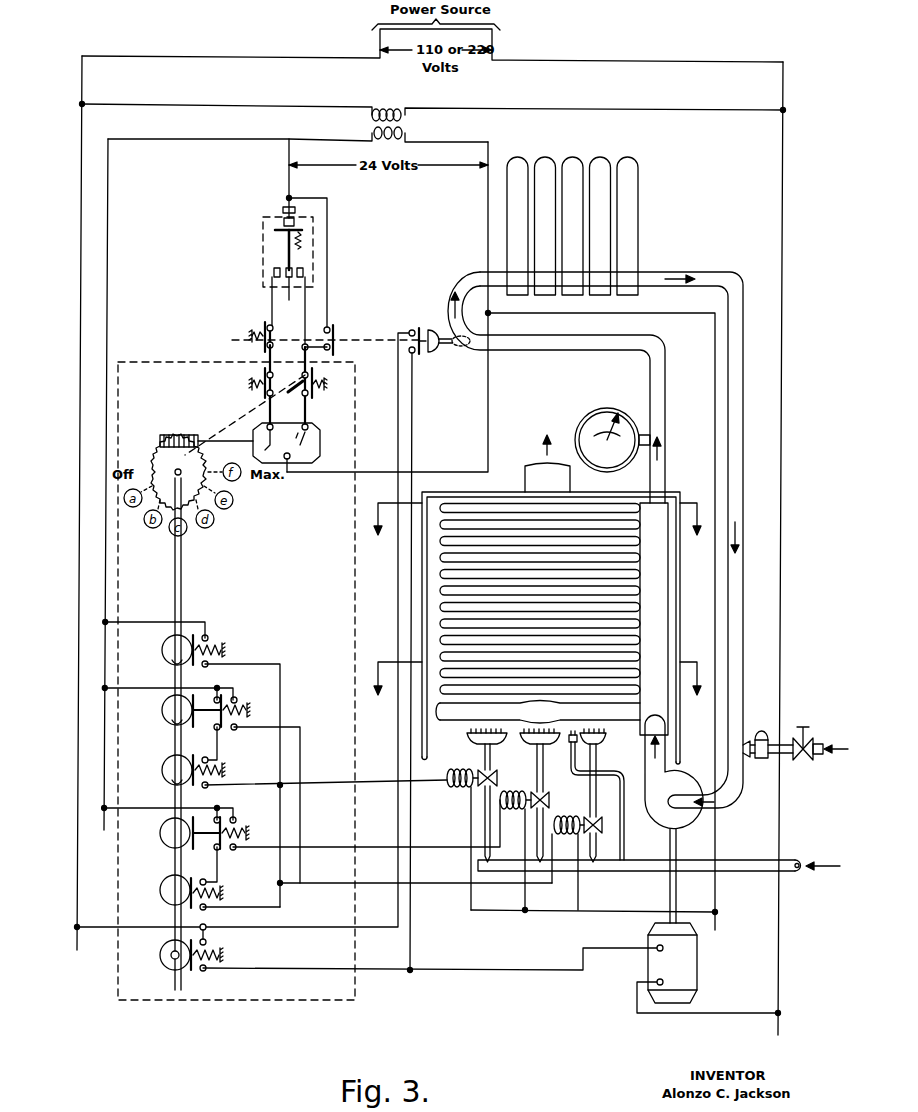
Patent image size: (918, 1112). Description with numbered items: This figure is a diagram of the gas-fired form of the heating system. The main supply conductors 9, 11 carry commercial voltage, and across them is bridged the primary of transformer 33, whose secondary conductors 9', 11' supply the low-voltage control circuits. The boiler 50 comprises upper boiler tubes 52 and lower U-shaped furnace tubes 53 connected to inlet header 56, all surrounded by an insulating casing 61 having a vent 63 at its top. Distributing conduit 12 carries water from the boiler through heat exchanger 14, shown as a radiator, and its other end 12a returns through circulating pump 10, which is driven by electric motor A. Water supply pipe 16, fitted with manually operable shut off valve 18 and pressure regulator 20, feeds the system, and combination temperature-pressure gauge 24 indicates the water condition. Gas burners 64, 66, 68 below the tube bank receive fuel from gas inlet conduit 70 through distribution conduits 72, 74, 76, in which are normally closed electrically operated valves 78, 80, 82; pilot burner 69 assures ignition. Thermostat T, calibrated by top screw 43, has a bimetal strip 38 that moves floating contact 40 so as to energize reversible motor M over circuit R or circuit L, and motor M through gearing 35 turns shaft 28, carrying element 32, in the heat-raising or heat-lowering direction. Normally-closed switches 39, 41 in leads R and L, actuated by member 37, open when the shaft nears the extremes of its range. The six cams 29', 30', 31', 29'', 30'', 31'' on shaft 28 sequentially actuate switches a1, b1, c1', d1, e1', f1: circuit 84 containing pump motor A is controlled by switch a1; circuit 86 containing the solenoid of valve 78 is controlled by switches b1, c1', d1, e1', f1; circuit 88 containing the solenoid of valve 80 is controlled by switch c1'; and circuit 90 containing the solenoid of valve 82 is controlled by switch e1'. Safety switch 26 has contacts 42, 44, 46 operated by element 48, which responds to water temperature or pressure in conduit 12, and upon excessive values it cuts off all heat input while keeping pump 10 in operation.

The electrical supply conductor 9 is at (426, 488).
The secondary conductor 9' is at (286, 472).
The electrical supply conductor 11 is at (451, 548).
The secondary conductor 11' is at (521, 523).
The transformer 33 is at (372, 116).
The top screw 43 is at (293, 210).
The thermostat T is at (263, 262).
The bimetal strip 38 is at (288, 255).
The circuit R is at (268, 310).
The floating contact 40 is at (286, 297).
The circuit L is at (312, 312).
The contact 46 is at (262, 340).
The contact 44 is at (336, 345).
The normally-closed switch 39 is at (264, 392).
The normally-closed switch 41 is at (311, 393).
The member 37 is at (245, 408).
The reversible motor M is at (290, 470).
The gearing 35 is at (180, 434).
The gear dial 32 is at (168, 460).
The cam shaft 28 is at (193, 734).
The cam 31'' is at (159, 650).
The cam 30'' is at (158, 710).
The cam 29'' is at (158, 770).
The cam 31' is at (159, 833).
The cam 30' is at (158, 890).
The cam 29' is at (157, 955).
The cam actuated switch f1 is at (212, 639).
The cam actuated switch e1' is at (202, 783).
The cam actuated switch d1 is at (228, 761).
The cam actuated switch c1' is at (188, 844).
The cam actuated switch b1 is at (226, 882).
The cam actuated switch a1 is at (226, 942).
The circuit 84 is at (392, 969).
The circuit 86 is at (384, 882).
The circuit 88 is at (384, 846).
The circuit 90 is at (384, 785).
The safety switch 26 is at (416, 326).
The contact 42 is at (421, 356).
The responsive element 48 is at (432, 332).
The heat exchanger 14 is at (568, 158).
The distribution conduit 12 is at (547, 351).
The conduit end 12a is at (736, 804).
The combination temperature-pressure gauge 24 is at (606, 408).
The vent 63 is at (525, 480).
The boiler 50 is at (420, 606).
The casing 61 is at (476, 492).
The boiler tubes 52 is at (562, 606).
The U-shaped furnace tubes 53 is at (556, 720).
The inlet header 56 is at (668, 626).
The gas burner 68 is at (477, 744).
The electrically operated valve 82 is at (470, 786).
The distribution conduit 76 is at (470, 836).
The gas burner 66 is at (530, 744).
The electrically operated valve 80 is at (522, 788).
The distribution conduit 74 is at (524, 836).
The pilot burner 69 is at (570, 742).
The gas burner 64 is at (594, 744).
The electrically operated valve 78 is at (582, 814).
The distribution conduit 72 is at (588, 840).
The gas inlet conduit 70 is at (656, 874).
The water circulating pump 10 is at (678, 776).
The pressure regulator 20 is at (760, 760).
The shut off valve 18 is at (803, 758).
The supply pipe 16 is at (812, 740).
The electric motor A is at (672, 963).